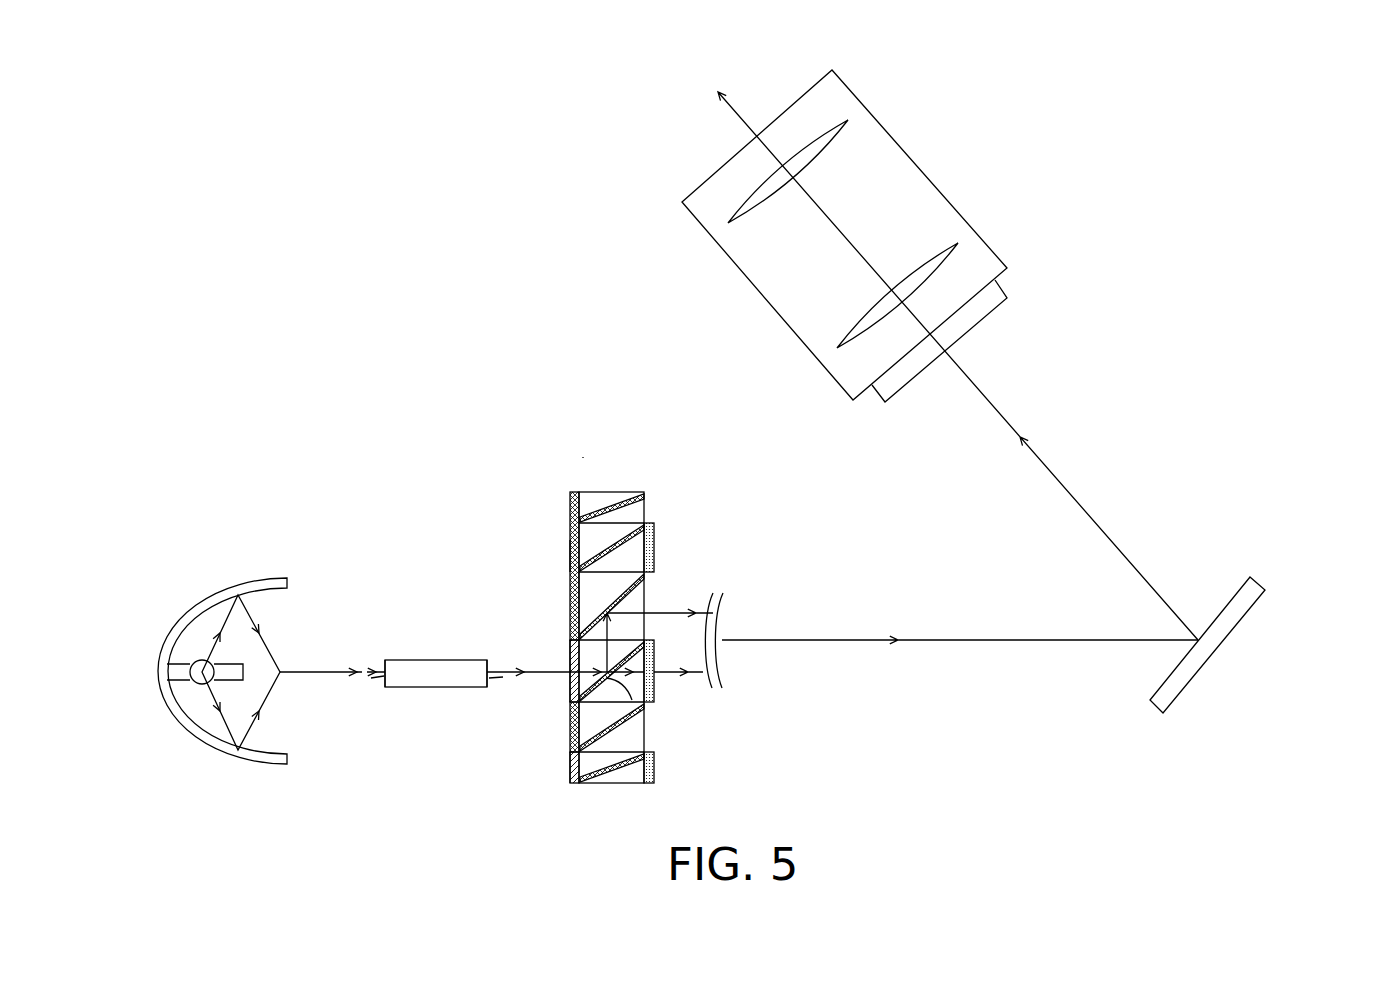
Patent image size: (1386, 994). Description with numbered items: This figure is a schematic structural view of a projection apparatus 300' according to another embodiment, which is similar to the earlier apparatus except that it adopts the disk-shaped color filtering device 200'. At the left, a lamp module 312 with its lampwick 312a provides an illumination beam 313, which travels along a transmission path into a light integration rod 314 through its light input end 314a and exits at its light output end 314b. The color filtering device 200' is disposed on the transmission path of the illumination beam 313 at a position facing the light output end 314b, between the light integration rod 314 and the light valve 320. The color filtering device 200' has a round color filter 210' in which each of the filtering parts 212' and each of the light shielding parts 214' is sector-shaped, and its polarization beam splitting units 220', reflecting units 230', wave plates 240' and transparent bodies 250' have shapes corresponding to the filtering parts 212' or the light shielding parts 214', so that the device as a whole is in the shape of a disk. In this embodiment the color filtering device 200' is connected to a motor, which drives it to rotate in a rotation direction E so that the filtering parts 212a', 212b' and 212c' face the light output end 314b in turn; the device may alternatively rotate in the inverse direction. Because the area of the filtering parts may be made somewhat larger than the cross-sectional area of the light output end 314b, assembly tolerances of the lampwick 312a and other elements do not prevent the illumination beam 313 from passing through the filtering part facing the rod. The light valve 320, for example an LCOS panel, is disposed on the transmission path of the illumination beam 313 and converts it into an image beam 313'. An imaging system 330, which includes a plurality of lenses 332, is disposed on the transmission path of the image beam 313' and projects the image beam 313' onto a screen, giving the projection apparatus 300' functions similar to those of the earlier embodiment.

The projection apparatus 300' is at (754, 456).
The lamp module 312 is at (213, 753).
The lampwick 312a is at (200, 660).
The illumination beam 313 is at (332, 562).
The light integration rod 314 is at (436, 687).
The light input end 314a is at (383, 681).
The light output end 314b is at (490, 687).
The color filtering device 200' is at (574, 651).
The color filter 210' is at (518, 632).
The light shielding parts 214' is at (542, 616).
The filtering parts 212' is at (542, 653).
The filtering part 212a' is at (495, 571).
The filtering part 212b' is at (495, 658).
The filtering part 212c' is at (545, 799).
The polarization beam splitting units 220' is at (646, 723).
The reflecting units 230' is at (647, 595).
The wave plates 240' is at (681, 531).
The transparent bodies 250' is at (654, 485).
The rotation direction E is at (580, 448).
The light valve 320 is at (1205, 668).
The image beam 313' is at (958, 366).
The imaging system 330 is at (862, 217).
The lenses 332 is at (943, 248).